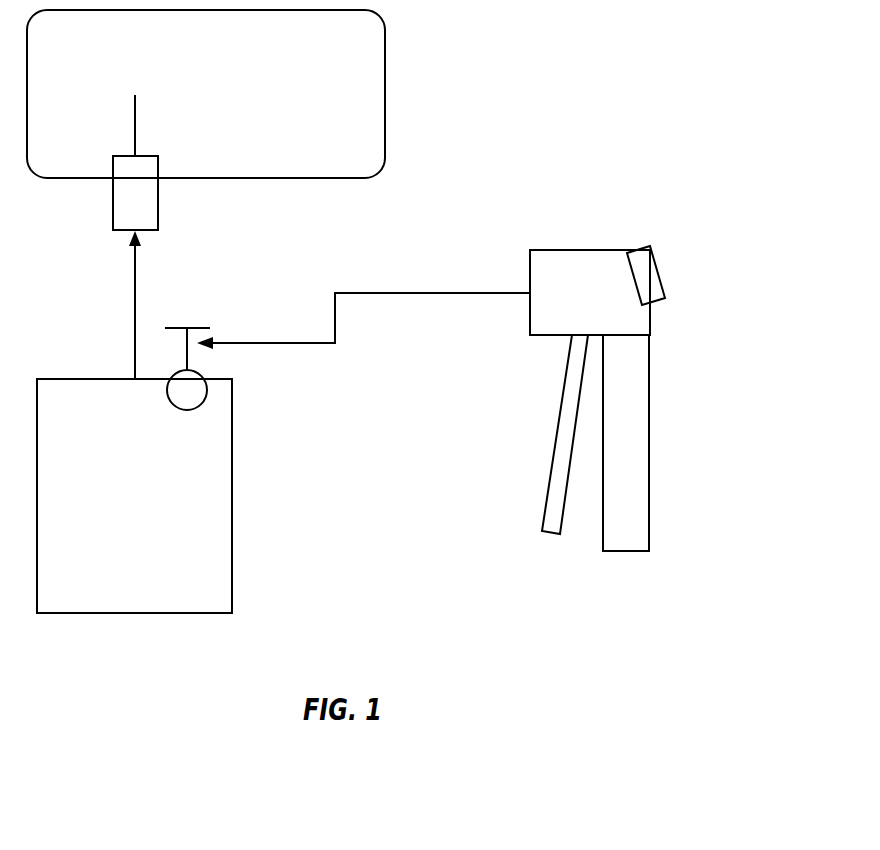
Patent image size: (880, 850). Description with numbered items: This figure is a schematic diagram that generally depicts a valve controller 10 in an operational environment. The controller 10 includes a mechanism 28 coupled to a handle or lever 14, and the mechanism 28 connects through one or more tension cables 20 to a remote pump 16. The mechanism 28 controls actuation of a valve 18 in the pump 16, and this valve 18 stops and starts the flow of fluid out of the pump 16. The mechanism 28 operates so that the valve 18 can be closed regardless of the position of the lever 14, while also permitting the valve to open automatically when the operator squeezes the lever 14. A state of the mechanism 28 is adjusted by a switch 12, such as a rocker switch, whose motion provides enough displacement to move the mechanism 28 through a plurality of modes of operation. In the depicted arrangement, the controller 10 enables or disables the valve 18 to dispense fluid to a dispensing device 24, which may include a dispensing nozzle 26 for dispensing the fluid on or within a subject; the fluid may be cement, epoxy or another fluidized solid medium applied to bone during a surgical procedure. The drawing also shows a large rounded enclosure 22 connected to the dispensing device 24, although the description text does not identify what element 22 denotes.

The valve controller 10 is at (724, 346).
The switch 12 is at (661, 272).
The lever 14 is at (555, 458).
The pump 16 is at (232, 510).
The valve 18 is at (207, 392).
The tension cable 20 is at (380, 294).
The reservoir 22 is at (385, 52).
The dispensing device 24 is at (113, 207).
The dispensing nozzle 26 is at (136, 116).
The mechanism 28 is at (570, 287).